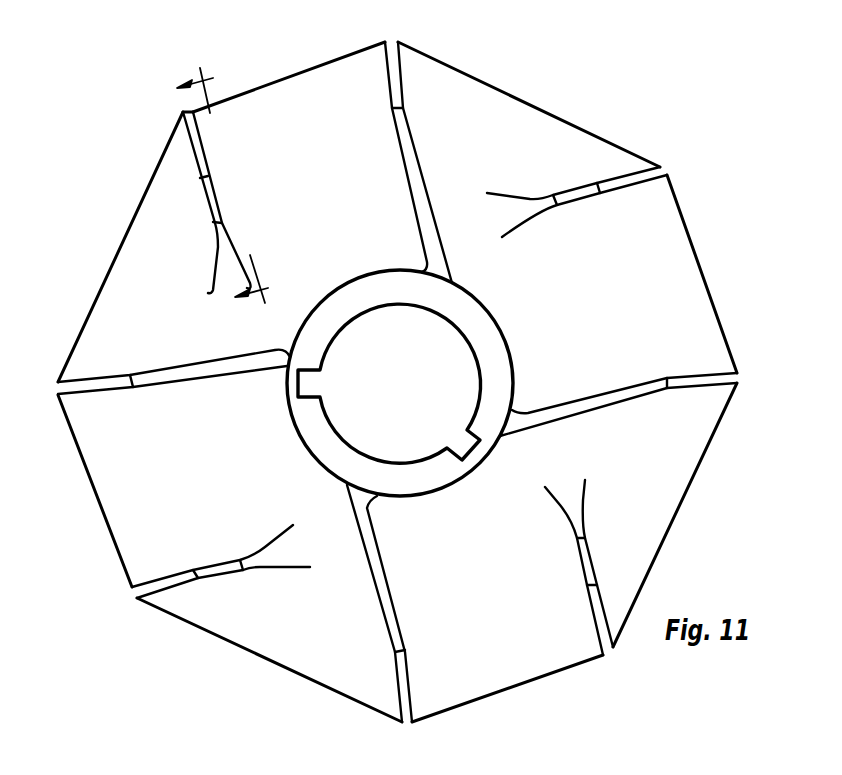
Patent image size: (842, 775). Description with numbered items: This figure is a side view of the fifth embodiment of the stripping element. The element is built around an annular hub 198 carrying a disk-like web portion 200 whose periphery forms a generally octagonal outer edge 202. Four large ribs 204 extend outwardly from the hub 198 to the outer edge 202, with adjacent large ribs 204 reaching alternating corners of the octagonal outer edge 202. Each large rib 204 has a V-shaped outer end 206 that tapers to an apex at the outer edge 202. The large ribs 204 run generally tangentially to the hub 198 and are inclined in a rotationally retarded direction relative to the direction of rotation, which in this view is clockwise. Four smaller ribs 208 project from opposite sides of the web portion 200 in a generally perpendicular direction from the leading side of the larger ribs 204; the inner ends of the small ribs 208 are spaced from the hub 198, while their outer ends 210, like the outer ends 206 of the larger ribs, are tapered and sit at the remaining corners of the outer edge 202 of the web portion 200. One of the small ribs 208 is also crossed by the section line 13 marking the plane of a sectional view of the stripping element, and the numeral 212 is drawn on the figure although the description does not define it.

The section line 13- 13 is at (235, 184).
The annular hub 198 is at (364, 283).
The web portion 200 is at (297, 83).
The outer edge 202 is at (151, 177).
The large rib 204 is at (165, 368).
The V-shaped outer end 206 is at (57, 391).
The small rib 208 is at (213, 204).
The outer end 210 is at (183, 111).
The slot 212 is at (411, 134).